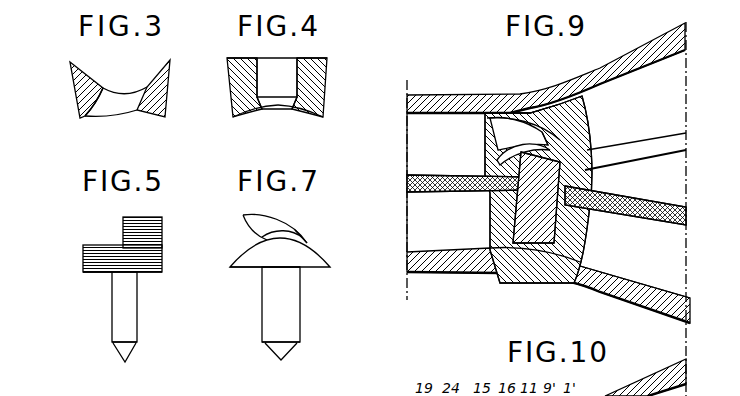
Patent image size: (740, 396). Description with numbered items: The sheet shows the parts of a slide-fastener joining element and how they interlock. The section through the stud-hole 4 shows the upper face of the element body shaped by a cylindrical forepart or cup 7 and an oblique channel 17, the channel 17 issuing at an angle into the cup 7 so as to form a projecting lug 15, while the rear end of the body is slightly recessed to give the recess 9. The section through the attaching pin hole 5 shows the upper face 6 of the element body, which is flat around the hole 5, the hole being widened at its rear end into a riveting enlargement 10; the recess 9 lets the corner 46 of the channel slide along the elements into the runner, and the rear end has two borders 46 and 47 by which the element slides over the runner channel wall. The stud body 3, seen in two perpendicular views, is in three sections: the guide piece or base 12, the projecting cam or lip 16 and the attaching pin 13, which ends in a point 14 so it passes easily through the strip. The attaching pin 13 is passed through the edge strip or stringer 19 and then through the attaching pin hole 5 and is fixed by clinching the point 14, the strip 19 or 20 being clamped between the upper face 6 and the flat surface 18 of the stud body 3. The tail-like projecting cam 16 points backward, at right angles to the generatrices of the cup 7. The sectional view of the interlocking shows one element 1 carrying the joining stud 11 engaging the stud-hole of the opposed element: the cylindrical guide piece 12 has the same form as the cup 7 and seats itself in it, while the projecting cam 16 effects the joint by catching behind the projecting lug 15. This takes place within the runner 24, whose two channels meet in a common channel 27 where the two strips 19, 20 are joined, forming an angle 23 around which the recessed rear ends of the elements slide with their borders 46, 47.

In FIG. 9, the element 1 is at (562, 262).
In FIG. 5, the stud body 3 is at (163, 269).
In FIG. 7, the stud body 3 is at (291, 267).
In FIG. 3, the stud-hole 4 is at (117, 107).
In FIG. 4, the attaching pin hole 5 is at (275, 84).
In FIG. 4, the upper face 6 is at (251, 57).
In FIG. 3, the cylindrical forepart or cup 7 is at (108, 82).
In FIG. 3, the recess 9 is at (139, 114).
In FIG. 4, the recess 9 is at (296, 101).
In FIG. 9, the recess 9 is at (549, 110).
In FIG. 4, the riveting enlargement 10 is at (262, 107).
In FIG. 7, the joining stud 11 is at (314, 246).
In FIG. 9, the joining stud 11 is at (540, 125).
In FIG. 5, the guide piece or base 12 is at (157, 265).
In FIG. 7, the guide piece or base 12 is at (303, 258).
In FIG. 9, the guide piece or base 12 is at (490, 197).
In FIG. 5, the attaching pin 13 is at (117, 305).
In FIG. 7, the attaching pin 13 is at (272, 297).
In FIG. 9, the attaching pin 13 is at (507, 243).
In FIG. 5, the point 14 is at (112, 352).
In FIG. 7, the point 14 is at (278, 352).
In FIG. 3, the projecting lug 15 is at (80, 96).
In FIG. 9, the projecting lug 15 is at (497, 113).
In FIG. 5, the projecting cam or lip 16 is at (123, 233).
In FIG. 7, the projecting cam or lip 16 is at (268, 230).
In FIG. 9, the projecting cam or lip 16 is at (527, 122).
In FIG. 3, the oblique channel 17 is at (96, 119).
In FIG. 5, the flat surface 18 is at (88, 275).
In FIG. 7, the flat surface 18 is at (246, 272).
In FIG. 9, the edge strip or stringer 19 is at (458, 177).
In FIG. 9, the strip 20 is at (637, 147).
In FIG. 10, the strip 20 is at (631, 395).
In FIG. 9, the angle 23 is at (528, 257).
In FIG. 9, the runner 24 is at (460, 100).
In FIG. 9, the common channel 27 is at (427, 232).
In FIG. 4, the border 46 is at (232, 117).
In FIG. 9, the border 46 is at (488, 255).
In FIG. 4, the border 47 is at (326, 116).
In FIG. 9, the border 47 is at (579, 284).